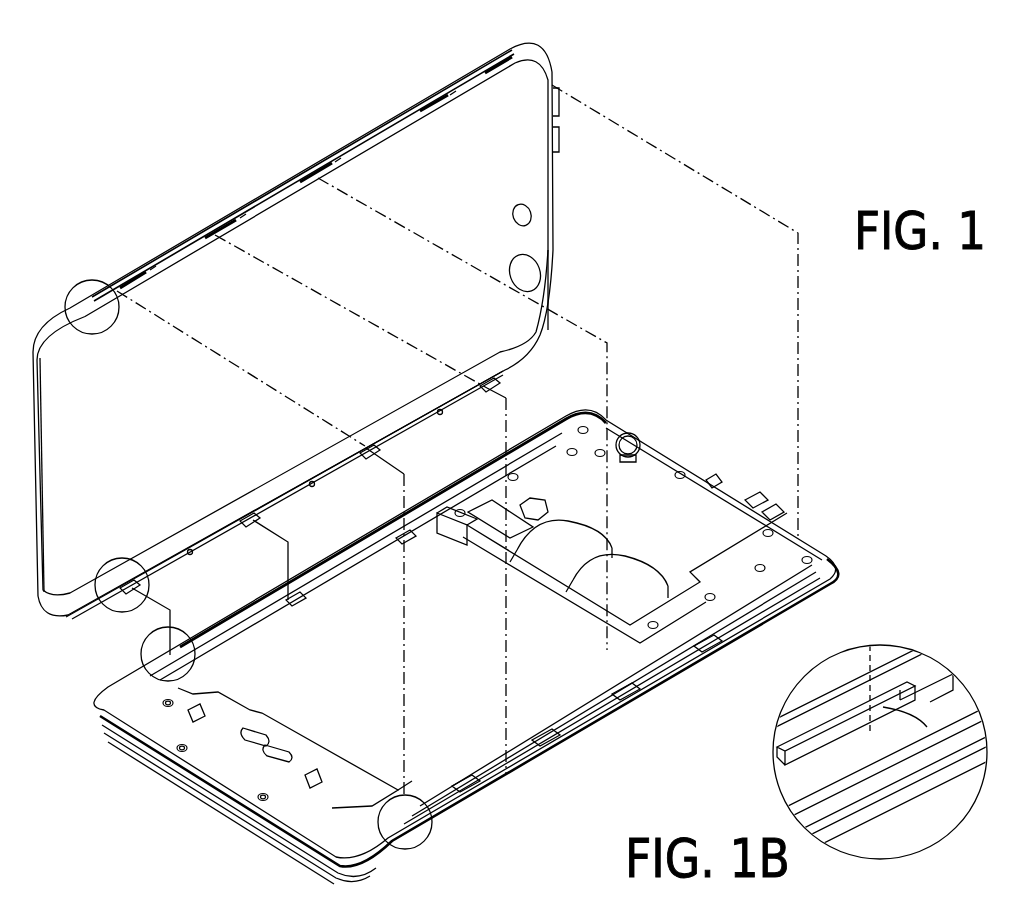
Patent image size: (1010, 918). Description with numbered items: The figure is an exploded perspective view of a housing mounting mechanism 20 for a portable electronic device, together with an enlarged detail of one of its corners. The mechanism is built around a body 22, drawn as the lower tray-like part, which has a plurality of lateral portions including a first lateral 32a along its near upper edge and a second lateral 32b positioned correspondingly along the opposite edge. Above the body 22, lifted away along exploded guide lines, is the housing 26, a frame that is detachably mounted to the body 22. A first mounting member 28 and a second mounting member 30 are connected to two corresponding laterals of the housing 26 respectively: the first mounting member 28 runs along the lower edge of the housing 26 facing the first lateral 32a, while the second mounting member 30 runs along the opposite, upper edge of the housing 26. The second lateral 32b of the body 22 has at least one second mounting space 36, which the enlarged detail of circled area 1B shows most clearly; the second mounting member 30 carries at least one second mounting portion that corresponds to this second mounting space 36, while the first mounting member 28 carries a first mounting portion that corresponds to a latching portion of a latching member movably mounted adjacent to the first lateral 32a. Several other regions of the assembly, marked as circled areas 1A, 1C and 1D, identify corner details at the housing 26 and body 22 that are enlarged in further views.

In FIG. 1, the housing mounting mechanism 20 is at (815, 170).
In FIG. 1, the body 22 is at (211, 815).
In FIG. 1, the housing 26 is at (362, 130).
In FIG. 1, the first mounting member 28 is at (505, 377).
In FIG. 1, the second mounting member 30 is at (248, 204).
In FIG. 1, the first lateral 32a is at (248, 594).
In FIG. 1, the second lateral 32b is at (632, 716).
In FIG. 1B, the second mounting space 36 is at (847, 750).
In FIG. 1, the circled area 1A is at (180, 627).
In FIG. 1, the circled area 1B is at (433, 830).
In FIG. 1, the circled area 1C is at (112, 612).
In FIG. 1, the circled area 1D is at (88, 280).